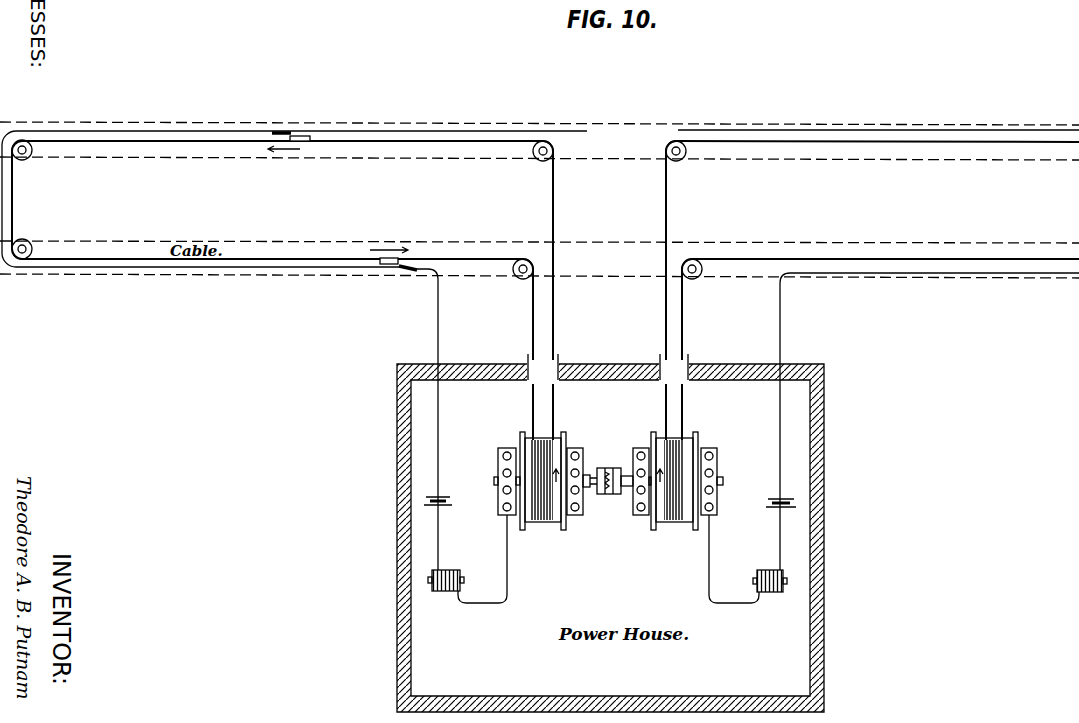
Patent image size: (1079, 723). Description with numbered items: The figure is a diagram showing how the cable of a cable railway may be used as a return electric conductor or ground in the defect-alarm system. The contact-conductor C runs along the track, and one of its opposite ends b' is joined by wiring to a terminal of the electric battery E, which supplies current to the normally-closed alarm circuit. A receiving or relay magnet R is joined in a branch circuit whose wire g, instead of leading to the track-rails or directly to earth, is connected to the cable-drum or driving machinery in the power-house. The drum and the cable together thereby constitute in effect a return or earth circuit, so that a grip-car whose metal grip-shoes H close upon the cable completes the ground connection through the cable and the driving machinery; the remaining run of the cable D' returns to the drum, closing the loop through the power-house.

The gripping device H is at (286, 130).
The contact-conductor C is at (350, 128).
The end of contact-conductor b' is at (545, 290).
The cable return run D' is at (700, 327).
The electric battery E is at (610, 495).
The receiving or relay magnet R is at (607, 571).
The branch circuit wire g is at (507, 560).